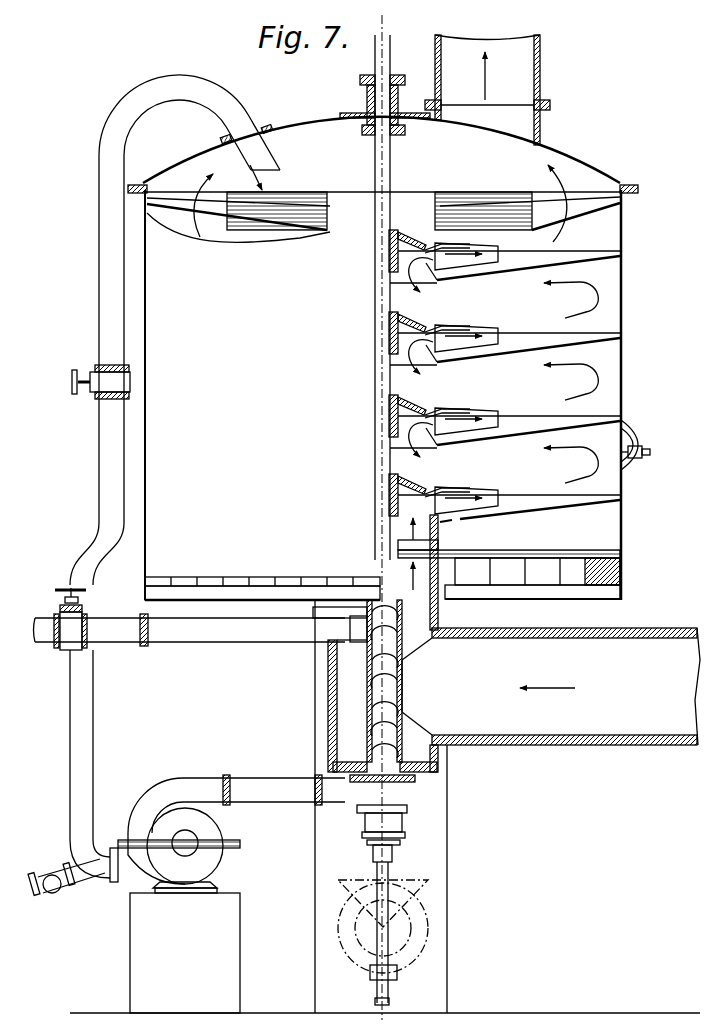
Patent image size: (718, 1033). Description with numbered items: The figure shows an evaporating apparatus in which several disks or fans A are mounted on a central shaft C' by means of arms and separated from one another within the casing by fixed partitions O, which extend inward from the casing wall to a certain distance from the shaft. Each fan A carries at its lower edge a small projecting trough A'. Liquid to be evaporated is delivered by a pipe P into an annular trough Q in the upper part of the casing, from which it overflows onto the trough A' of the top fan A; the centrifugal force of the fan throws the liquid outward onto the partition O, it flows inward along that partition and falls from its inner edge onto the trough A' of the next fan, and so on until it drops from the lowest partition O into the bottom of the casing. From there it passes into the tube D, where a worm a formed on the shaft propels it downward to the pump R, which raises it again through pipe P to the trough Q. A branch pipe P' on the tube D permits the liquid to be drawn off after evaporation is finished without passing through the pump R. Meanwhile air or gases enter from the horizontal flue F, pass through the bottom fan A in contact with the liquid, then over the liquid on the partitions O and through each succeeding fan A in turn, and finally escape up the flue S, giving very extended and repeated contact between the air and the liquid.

The flue S is at (487, 90).
The annular trough Q is at (382, 205).
The disk or fan A is at (504, 370).
The projecting trough A' is at (505, 389).
The fixed partition O is at (557, 399).
The central shaft C' is at (385, 517).
The pipe P is at (154, 485).
The branch pipe P' is at (201, 627).
The tube D is at (383, 661).
The screw conveyor a is at (398, 667).
The air-supply pipe or flue F is at (551, 686).
The pump R is at (231, 894).